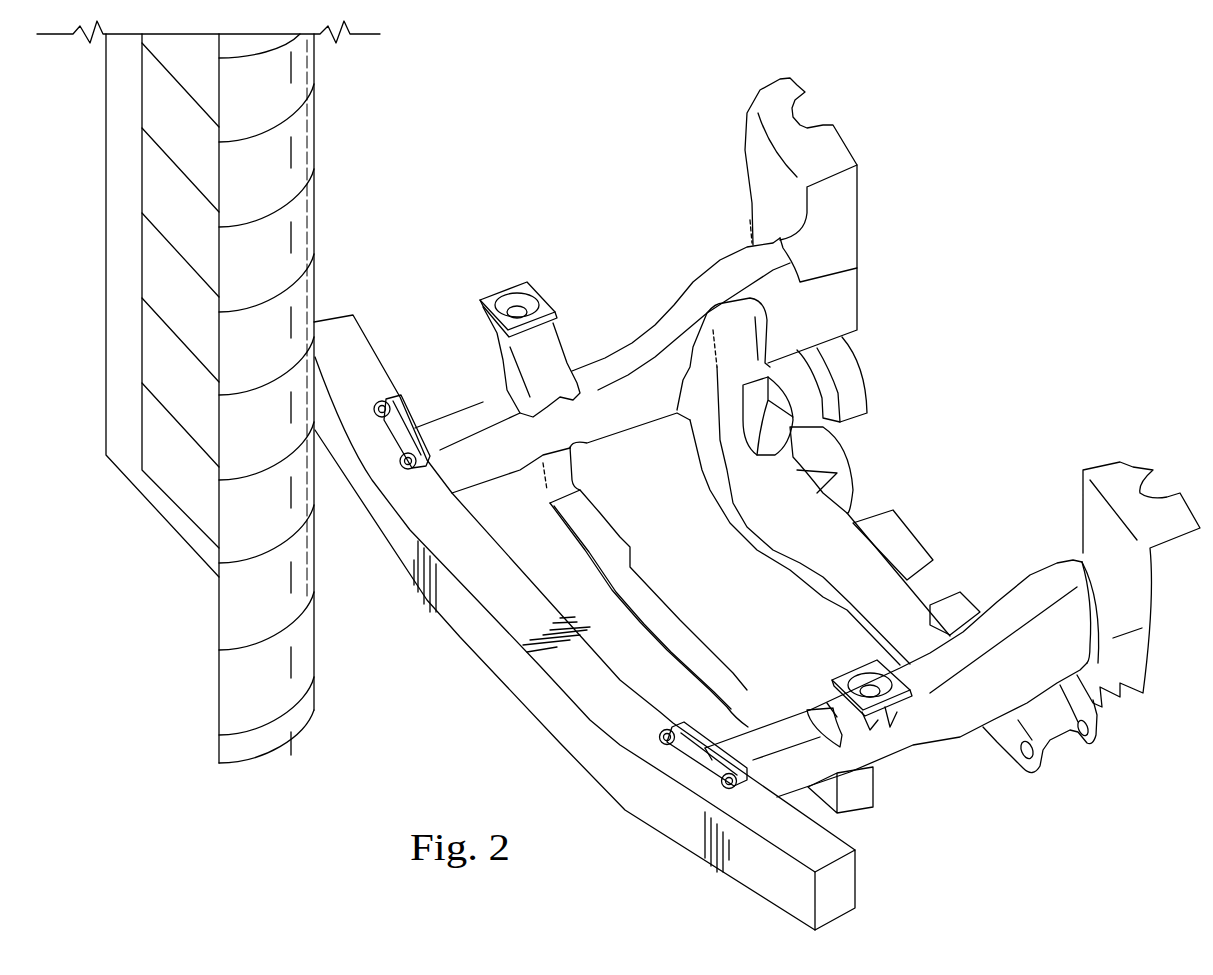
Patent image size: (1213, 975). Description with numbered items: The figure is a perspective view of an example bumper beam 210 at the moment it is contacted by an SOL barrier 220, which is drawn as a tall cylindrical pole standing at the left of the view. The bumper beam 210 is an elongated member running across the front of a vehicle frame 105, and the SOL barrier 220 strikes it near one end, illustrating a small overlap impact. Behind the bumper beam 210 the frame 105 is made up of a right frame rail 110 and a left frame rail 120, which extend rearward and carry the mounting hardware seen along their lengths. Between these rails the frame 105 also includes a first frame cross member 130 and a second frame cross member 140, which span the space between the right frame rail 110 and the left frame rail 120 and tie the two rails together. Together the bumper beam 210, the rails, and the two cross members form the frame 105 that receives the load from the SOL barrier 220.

The frame 105 is at (538, 214).
The right frame rail 110 is at (655, 333).
The left frame rail 120 is at (913, 745).
The No. 1 frame cross member 130 is at (603, 523).
The No. 2 frame cross member 140 is at (790, 573).
The bumper beam 210 is at (478, 664).
The SOL barrier 220 is at (316, 136).